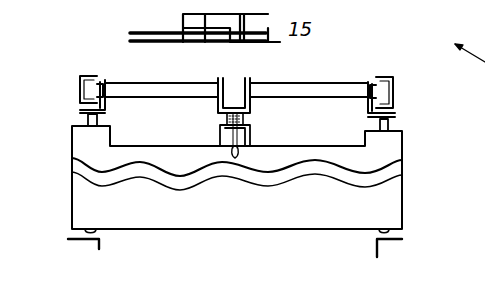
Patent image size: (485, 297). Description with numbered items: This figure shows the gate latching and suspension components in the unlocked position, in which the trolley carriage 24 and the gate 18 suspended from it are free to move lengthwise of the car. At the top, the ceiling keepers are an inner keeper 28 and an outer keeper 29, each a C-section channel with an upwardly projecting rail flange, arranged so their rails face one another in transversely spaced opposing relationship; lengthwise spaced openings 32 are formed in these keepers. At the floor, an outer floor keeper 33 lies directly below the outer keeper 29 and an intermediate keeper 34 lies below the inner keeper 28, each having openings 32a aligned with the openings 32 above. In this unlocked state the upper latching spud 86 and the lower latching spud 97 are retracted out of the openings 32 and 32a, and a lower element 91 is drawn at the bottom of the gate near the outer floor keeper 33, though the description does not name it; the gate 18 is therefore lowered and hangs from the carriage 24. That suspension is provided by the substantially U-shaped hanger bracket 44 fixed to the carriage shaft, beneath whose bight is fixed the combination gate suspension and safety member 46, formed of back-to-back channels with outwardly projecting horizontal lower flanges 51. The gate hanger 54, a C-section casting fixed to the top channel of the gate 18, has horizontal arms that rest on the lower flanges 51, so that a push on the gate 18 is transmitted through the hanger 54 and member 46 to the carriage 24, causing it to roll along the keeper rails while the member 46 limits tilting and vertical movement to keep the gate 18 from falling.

The gate 18 is at (278, 232).
The carriage 24 is at (339, 83).
The inner keeper 28 is at (388, 78).
The outer keeper 29 is at (85, 76).
The openings 32 is at (88, 102).
The openings 32a is at (90, 243).
The outer floor keeper 33 is at (101, 245).
The intermediate keeper 34 is at (402, 240).
The hanger bracket 44 is at (248, 80).
The combination gate suspension and safety member 46 is at (246, 118).
The lower flanges 51 is at (234, 151).
The gate hanger 54 is at (220, 125).
The upper latching spud 86 is at (88, 118).
The roller 91 is at (84, 230).
The lower latching spud 97 is at (378, 232).